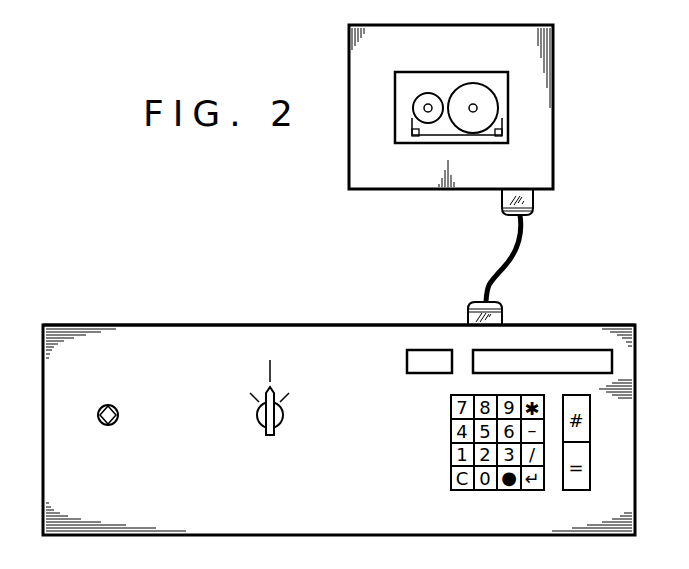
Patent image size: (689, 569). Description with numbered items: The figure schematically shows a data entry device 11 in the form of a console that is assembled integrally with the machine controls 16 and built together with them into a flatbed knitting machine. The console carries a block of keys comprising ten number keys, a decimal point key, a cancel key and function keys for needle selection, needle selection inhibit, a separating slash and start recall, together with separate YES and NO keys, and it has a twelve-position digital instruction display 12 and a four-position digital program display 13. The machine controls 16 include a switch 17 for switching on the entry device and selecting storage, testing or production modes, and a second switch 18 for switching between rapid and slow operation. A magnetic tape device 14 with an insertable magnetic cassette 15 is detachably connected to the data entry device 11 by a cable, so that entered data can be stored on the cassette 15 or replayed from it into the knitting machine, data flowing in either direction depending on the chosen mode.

The data entry device 11 is at (633, 391).
The digital instruction display 12 is at (572, 355).
The digital program display 13 is at (420, 355).
The magnetic tape device 14 is at (543, 135).
The magnetic cassette 15 is at (503, 90).
The machine controls 16 is at (145, 333).
The switch 17 is at (283, 420).
The second switch 18 is at (118, 415).